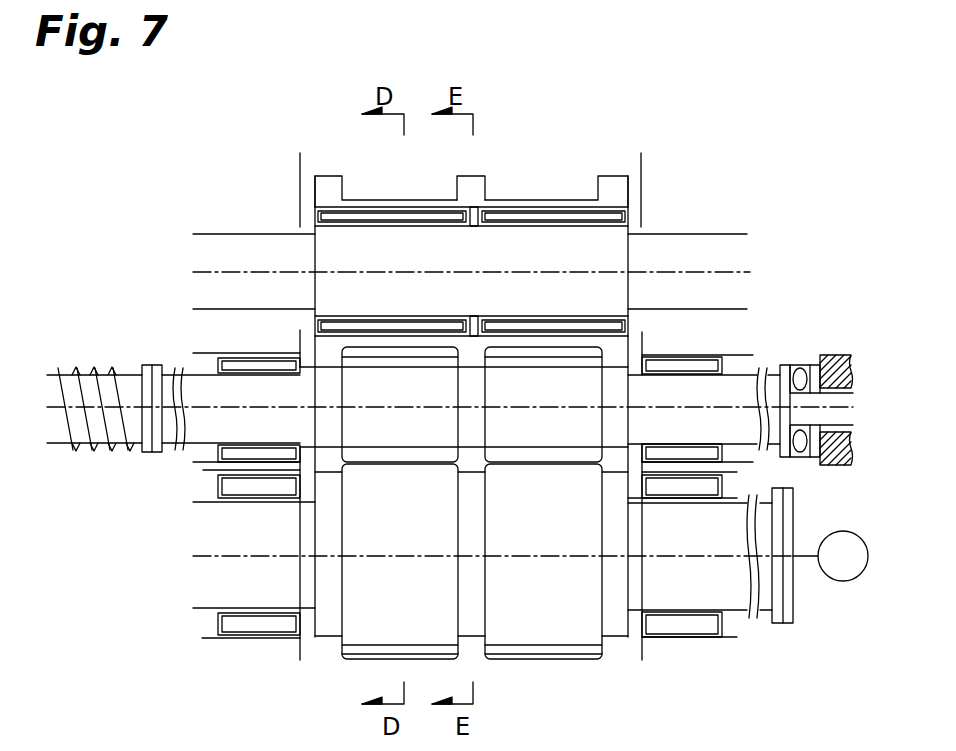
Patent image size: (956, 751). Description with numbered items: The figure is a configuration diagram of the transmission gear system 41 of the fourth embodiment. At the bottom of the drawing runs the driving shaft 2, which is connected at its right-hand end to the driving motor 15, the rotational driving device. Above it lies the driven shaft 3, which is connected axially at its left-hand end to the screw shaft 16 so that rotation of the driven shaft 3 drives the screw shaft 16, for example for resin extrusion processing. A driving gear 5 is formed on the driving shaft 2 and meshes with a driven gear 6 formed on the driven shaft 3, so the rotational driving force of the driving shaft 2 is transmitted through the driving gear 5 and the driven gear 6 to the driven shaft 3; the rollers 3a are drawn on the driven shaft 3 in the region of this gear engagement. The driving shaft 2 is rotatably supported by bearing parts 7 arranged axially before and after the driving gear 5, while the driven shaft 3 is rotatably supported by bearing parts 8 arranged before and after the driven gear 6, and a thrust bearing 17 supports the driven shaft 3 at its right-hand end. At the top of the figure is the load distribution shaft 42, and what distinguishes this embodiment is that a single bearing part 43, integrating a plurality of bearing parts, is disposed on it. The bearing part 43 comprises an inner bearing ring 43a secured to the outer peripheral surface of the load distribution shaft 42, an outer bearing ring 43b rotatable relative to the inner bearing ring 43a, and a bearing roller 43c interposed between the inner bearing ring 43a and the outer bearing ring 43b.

The driving shaft 2 is at (228, 585).
The driven shaft 3 is at (215, 422).
The roller 3a is at (330, 366).
The driving gear 5 is at (375, 660).
The driven gear 6 is at (398, 465).
The bearing parts 7 is at (260, 622).
The bearing parts 8 is at (258, 364).
The driving motor 15 is at (845, 583).
The screw shaft 16 is at (96, 368).
The thrust bearing 17 is at (783, 362).
The transmission gear system 41 is at (528, 203).
The load distribution shaft 42 is at (215, 233).
The bearing part 43 is at (638, 192).
The inner bearing ring 43a is at (400, 228).
The outer bearing ring 43b is at (475, 176).
The bearing roller 43c is at (555, 212).